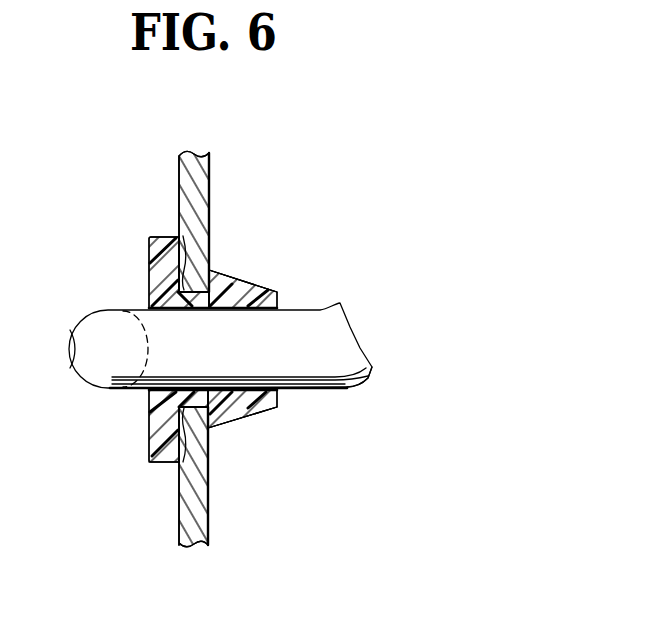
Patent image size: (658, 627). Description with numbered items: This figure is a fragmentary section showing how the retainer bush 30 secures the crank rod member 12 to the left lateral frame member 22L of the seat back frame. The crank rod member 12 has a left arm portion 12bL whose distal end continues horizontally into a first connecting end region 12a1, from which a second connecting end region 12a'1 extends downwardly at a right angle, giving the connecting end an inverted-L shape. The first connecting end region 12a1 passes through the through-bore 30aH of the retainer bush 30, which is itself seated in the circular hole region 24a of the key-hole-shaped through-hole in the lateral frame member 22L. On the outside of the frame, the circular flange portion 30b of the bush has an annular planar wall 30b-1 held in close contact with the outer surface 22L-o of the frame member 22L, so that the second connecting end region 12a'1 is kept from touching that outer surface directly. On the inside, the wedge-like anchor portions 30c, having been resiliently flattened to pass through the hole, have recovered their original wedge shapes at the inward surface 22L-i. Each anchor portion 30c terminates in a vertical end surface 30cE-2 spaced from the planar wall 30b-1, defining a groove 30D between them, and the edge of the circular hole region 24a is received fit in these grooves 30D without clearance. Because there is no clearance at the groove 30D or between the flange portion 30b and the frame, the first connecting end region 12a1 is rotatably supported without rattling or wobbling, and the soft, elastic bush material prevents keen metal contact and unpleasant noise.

The crank rod member 12 is at (358, 309).
The first connecting end region 12a1 is at (187, 365).
The second connecting end region 12a'1 is at (49, 320).
The left arm portion 12bL is at (365, 380).
The circular hole region 24a is at (178, 398).
The left lateral frame member 22L is at (210, 187).
The outer surface of lateral frame member 22L-o is at (179, 172).
The inward surface of lateral frame member 22L-i is at (210, 160).
The retainer bush 30 is at (247, 346).
The through-bore 30aH is at (250, 392).
The flange portion 30b is at (149, 258).
The planar wall of flange portion 30b-1 is at (179, 224).
The anchor portion 30c is at (232, 282).
The vertical end surface 30cE-2 is at (285, 495).
The groove 30D is at (187, 240).